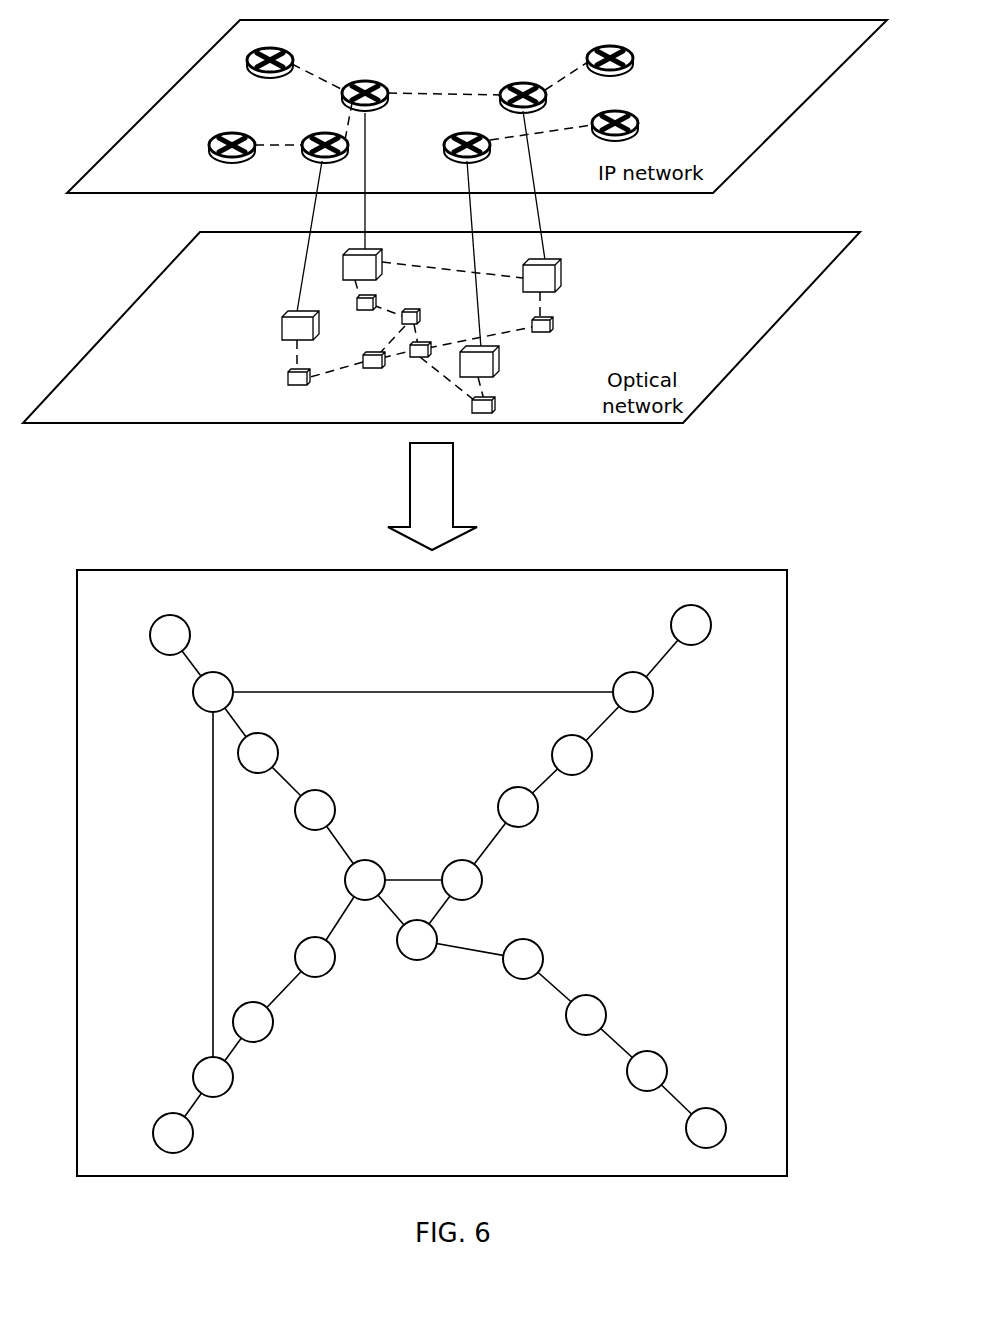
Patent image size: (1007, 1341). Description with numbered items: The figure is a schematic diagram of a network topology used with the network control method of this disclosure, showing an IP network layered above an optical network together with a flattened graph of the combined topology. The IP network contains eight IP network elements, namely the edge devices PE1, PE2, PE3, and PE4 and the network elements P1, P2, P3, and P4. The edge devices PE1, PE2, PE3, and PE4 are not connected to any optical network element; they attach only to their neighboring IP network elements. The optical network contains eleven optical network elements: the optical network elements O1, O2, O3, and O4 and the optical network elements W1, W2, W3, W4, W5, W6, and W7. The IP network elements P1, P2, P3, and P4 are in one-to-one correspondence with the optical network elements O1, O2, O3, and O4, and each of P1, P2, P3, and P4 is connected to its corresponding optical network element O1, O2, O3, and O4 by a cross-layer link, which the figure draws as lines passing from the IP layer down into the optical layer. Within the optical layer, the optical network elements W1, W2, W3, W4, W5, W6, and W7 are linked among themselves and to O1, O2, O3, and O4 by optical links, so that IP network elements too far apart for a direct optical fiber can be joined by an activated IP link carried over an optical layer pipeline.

The IP network element PE1 is at (199, 351).
The IP network element PE2 is at (181, 643).
The IP network element PE3 is at (674, 345).
The IP network element PE4 is at (682, 638).
The IP network element P1 is at (292, 381).
The IP network element P2 is at (256, 600).
The IP network element P3 is at (565, 384).
The IP network element P4 is at (574, 612).
The optical network element O1 is at (331, 504).
The optical network element O2 is at (273, 676).
The optical network element O3 is at (564, 517).
The optical network element O4 is at (539, 690).
The optical network element W1 is at (335, 562).
The optical network element W2 is at (288, 673).
The optical network element W3 is at (546, 570).
The optical network element W4 is at (512, 686).
The optical network element W5 is at (387, 590).
The optical network element W6 is at (446, 607).
The optical network element W7 is at (397, 672).